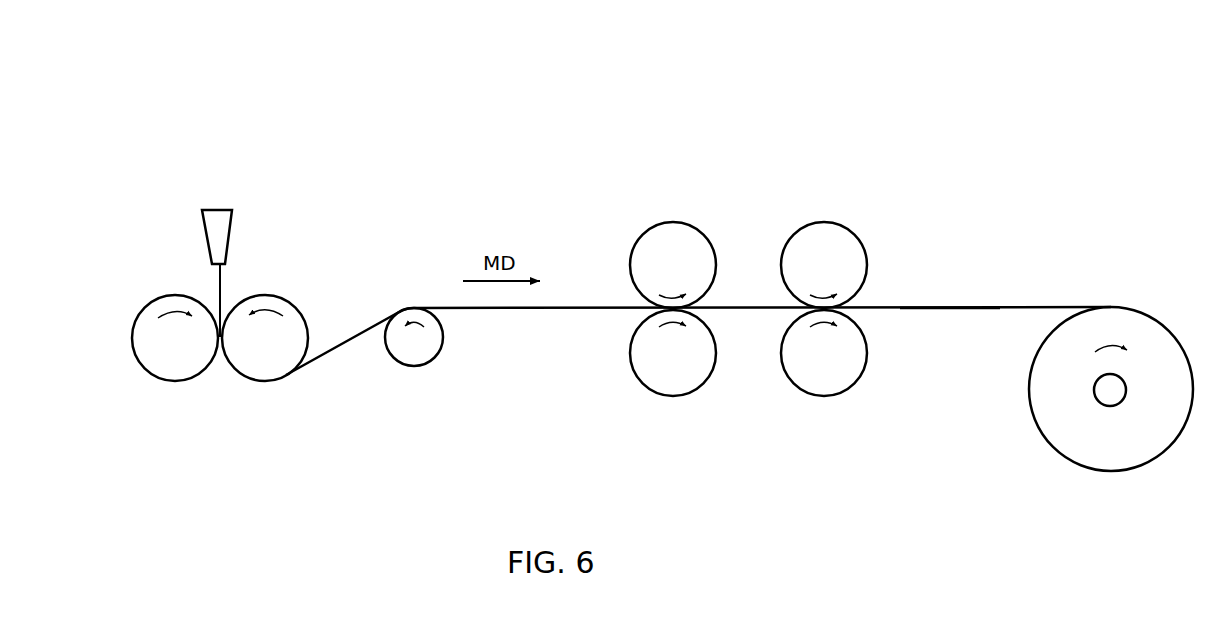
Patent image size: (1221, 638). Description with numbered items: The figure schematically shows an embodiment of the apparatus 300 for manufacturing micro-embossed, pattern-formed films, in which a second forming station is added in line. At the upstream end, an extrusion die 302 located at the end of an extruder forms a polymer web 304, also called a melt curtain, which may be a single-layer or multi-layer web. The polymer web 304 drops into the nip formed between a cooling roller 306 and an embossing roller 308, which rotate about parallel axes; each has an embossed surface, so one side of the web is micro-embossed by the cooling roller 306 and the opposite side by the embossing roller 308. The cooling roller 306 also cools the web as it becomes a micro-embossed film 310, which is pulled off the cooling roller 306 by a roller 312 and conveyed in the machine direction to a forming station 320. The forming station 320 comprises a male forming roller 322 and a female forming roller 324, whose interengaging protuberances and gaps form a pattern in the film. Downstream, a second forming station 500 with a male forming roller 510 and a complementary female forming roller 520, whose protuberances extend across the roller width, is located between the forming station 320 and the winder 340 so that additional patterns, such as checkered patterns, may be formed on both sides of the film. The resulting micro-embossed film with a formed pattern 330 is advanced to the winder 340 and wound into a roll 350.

The apparatus 300 is at (257, 80).
The extrusion die 302 is at (204, 222).
The polymer web 304 is at (217, 271).
The cooling roller 306 is at (291, 304).
The embossing roller 308 is at (149, 371).
The micro-embossed film 310 is at (322, 357).
The roller 312 is at (433, 362).
The forming station 320 is at (616, 181).
The male forming roller 322 is at (655, 232).
The female forming roller 324 is at (643, 386).
The forming station 500 is at (792, 181).
The male forming roller 510 is at (800, 233).
The female forming roller 520 is at (798, 386).
The micro-embossed film with a formed pattern 330 is at (985, 307).
The winder 340 is at (1100, 404).
The roll 350 is at (1027, 385).